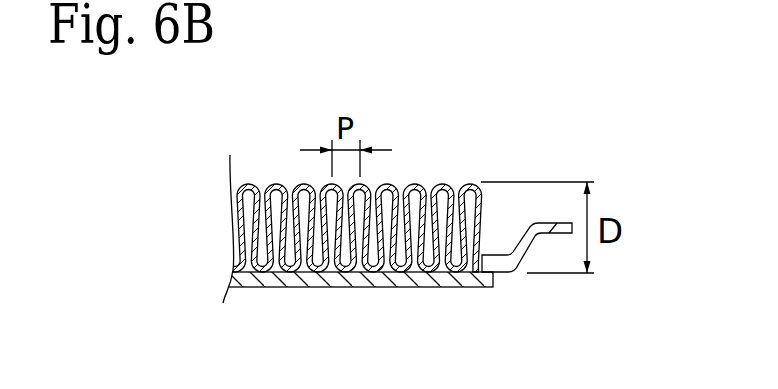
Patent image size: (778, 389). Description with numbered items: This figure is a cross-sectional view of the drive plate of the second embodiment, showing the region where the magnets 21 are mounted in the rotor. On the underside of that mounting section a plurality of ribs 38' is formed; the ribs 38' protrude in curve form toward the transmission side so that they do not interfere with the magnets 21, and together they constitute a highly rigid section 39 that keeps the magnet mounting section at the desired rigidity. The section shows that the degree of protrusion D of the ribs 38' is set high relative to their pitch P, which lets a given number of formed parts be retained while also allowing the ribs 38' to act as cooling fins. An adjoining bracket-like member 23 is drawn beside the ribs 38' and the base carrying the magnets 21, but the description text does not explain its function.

The highly rigid section 39 is at (447, 81).
The rib 38' is at (373, 186).
The mounting bracket 23 is at (551, 166).
The magnet 21 is at (422, 287).